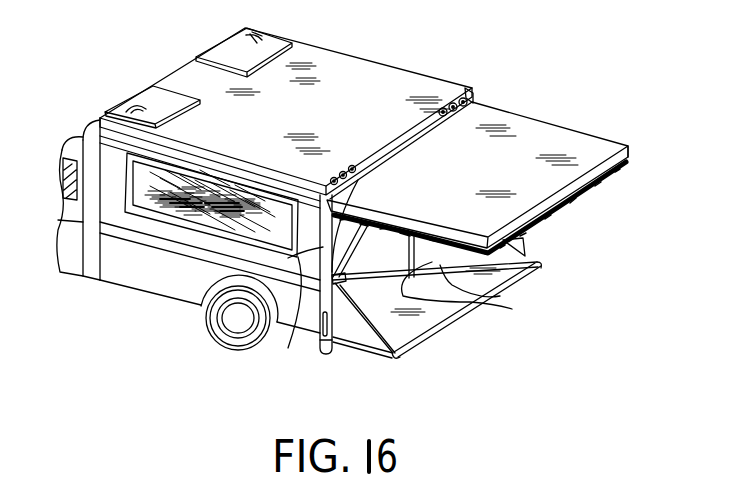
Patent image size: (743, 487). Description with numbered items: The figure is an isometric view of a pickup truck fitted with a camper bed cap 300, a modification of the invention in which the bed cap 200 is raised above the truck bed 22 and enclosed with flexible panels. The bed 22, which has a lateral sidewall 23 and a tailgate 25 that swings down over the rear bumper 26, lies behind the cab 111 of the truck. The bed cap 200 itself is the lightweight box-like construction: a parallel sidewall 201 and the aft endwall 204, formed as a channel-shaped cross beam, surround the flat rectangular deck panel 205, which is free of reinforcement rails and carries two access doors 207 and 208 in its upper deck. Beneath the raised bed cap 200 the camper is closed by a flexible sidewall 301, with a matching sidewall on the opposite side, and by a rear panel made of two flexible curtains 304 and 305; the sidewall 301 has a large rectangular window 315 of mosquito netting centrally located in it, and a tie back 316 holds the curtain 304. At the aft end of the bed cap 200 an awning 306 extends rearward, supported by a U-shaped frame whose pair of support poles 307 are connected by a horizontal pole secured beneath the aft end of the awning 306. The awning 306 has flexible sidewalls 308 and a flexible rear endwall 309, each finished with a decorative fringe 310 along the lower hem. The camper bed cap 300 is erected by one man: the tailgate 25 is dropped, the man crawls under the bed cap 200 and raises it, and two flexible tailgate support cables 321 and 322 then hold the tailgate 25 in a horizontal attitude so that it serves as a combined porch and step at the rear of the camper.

The bed cap 200 is at (327, 48).
The sidewall 201 is at (92, 155).
The aft endwall 204 is at (473, 97).
The deck panel 205 is at (319, 114).
The access door 207 is at (147, 92).
The access door 208 is at (218, 53).
The cab 111 is at (98, 127).
The camper bed cap 300 is at (493, 63).
The flexible sidewall 301 is at (110, 208).
The flexible curtain 304 is at (318, 348).
The flexible curtain 305 is at (536, 268).
The awning 306 is at (562, 131).
The support pole 307 is at (479, 292).
The flexible sidewall 308 is at (350, 207).
The flexible rear endwall 309 is at (631, 148).
The decorative fringe 310 is at (603, 184).
The window 315 is at (213, 257).
The tie back 316 is at (390, 212).
The tailgate support cable 321 is at (378, 343).
The tailgate support cable 322 is at (526, 244).
The bed 22 is at (143, 267).
The lateral sidewall 23 is at (181, 286).
The tailgate 25 is at (441, 325).
The rear bumper 26 is at (322, 357).